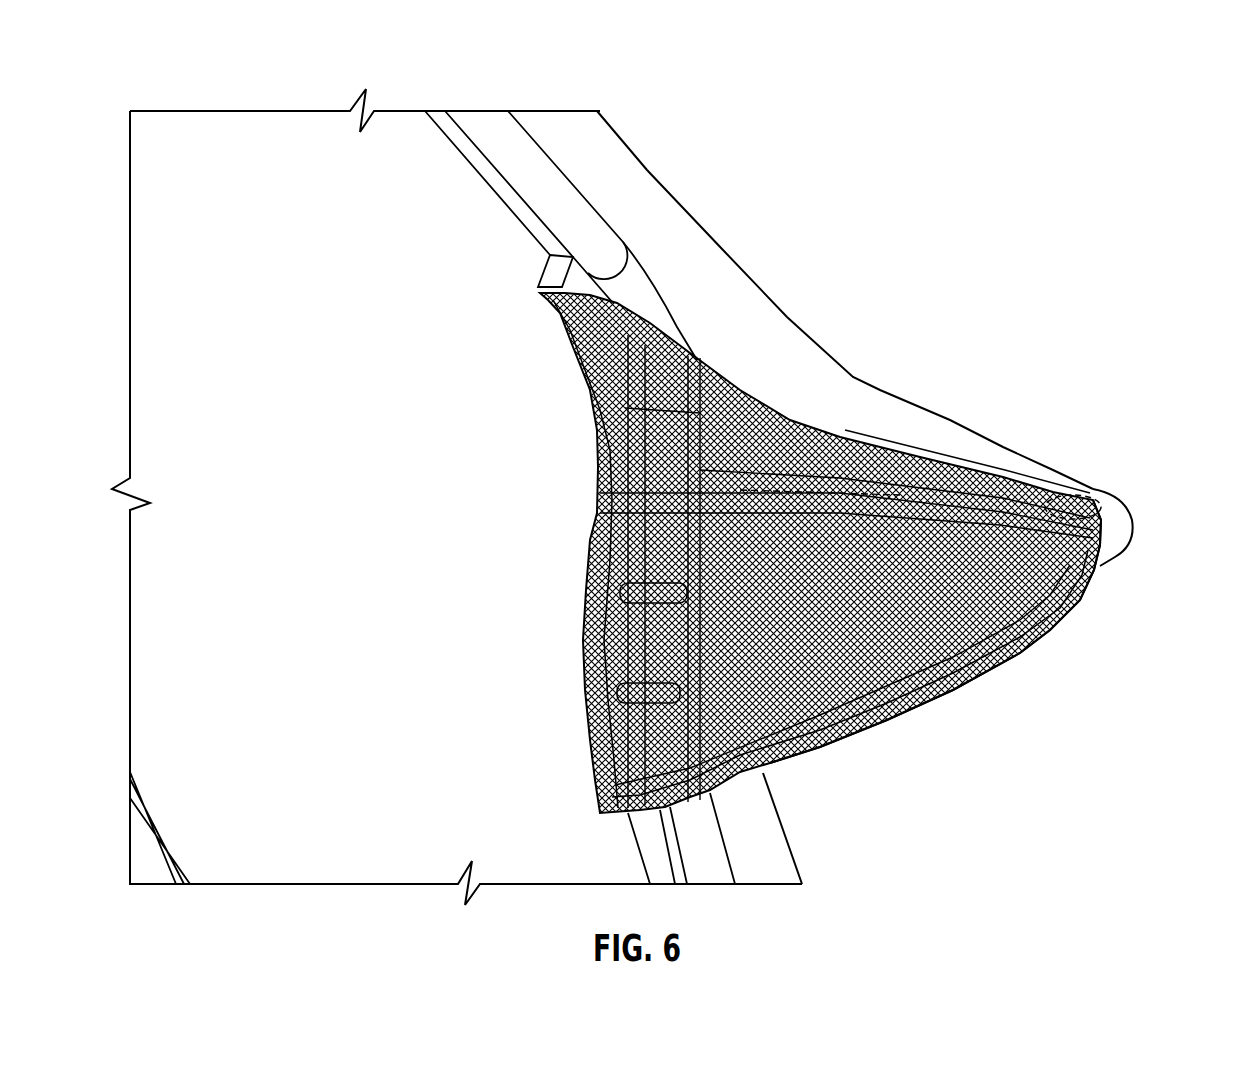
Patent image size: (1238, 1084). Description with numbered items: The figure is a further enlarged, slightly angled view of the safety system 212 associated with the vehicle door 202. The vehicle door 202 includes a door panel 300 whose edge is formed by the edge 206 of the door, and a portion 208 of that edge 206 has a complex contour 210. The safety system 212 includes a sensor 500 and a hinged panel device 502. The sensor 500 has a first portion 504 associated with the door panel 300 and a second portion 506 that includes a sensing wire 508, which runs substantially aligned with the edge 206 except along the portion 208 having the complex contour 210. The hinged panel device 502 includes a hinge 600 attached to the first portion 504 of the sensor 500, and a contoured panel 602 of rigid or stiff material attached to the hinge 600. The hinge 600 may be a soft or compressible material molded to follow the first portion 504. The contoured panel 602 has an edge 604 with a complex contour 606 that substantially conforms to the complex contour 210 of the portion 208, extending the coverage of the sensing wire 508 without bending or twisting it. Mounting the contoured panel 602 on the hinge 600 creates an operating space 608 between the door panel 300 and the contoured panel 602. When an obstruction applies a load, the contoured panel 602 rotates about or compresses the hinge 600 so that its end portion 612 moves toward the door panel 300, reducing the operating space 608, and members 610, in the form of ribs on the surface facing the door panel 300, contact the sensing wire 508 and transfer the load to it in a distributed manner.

The vehicle door 202 is at (190, 127).
The door panel 300 is at (288, 178).
The first portion 504 is at (513, 190).
The second portion 506 is at (575, 212).
The sensing wire 508 is at (628, 287).
The hinge 600 is at (548, 275).
The edge 206 is at (814, 343).
The complex contour 210 is at (1107, 470).
The portion 208 is at (1053, 440).
The operating space 608 is at (1083, 513).
The sensor 500 is at (632, 838).
The safety system 212 is at (580, 637).
The members 610 is at (617, 720).
The end portion 612 is at (947, 513).
The contoured panel 602 is at (987, 600).
The edge 604 is at (1100, 575).
The complex contour 606 is at (1060, 627).
The hinged panel device 502 is at (847, 687).